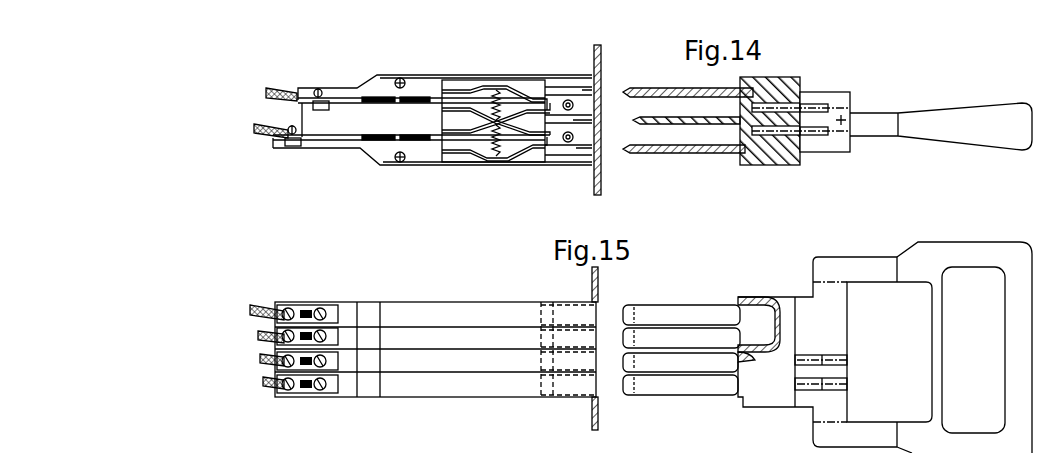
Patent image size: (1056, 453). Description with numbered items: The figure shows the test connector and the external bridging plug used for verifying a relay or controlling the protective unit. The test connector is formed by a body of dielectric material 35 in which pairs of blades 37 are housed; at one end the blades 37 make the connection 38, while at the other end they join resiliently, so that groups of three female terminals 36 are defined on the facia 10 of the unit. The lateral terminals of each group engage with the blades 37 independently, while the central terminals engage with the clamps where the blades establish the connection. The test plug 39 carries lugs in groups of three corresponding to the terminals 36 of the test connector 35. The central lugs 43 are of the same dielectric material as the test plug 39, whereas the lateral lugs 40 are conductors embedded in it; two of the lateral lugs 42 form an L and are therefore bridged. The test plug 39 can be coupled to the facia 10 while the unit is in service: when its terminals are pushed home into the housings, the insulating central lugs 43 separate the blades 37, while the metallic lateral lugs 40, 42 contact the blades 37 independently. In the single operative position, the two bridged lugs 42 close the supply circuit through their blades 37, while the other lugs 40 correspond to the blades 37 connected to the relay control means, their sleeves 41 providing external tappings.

In FIG. 14, the facia 10 is at (594, 55).
In FIG. 15, the facia 10 is at (590, 410).
In FIG. 14, the body of dielectric material 35 is at (372, 158).
In FIG. 14, the female terminals 36 is at (576, 148).
In FIG. 14, the blades 37 is at (462, 150).
In FIG. 15, the blades 37 is at (430, 363).
In FIG. 14, the connection 38 is at (268, 143).
In FIG. 15, the connection 38 is at (285, 382).
In FIG. 14, the test plug 39 is at (884, 106).
In FIG. 15, the test plug 39 is at (872, 250).
In FIG. 14, the lateral lugs 40 is at (700, 88).
In FIG. 15, the lateral lugs 40 is at (690, 395).
In FIG. 14, the sleeves 41 is at (773, 100).
In FIG. 15, the sleeves 41 is at (800, 392).
In FIG. 14, the bridged lugs 42 is at (698, 153).
In FIG. 15, the bridged lugs 42 is at (672, 338).
In FIG. 14, the central lugs 43 is at (670, 124).